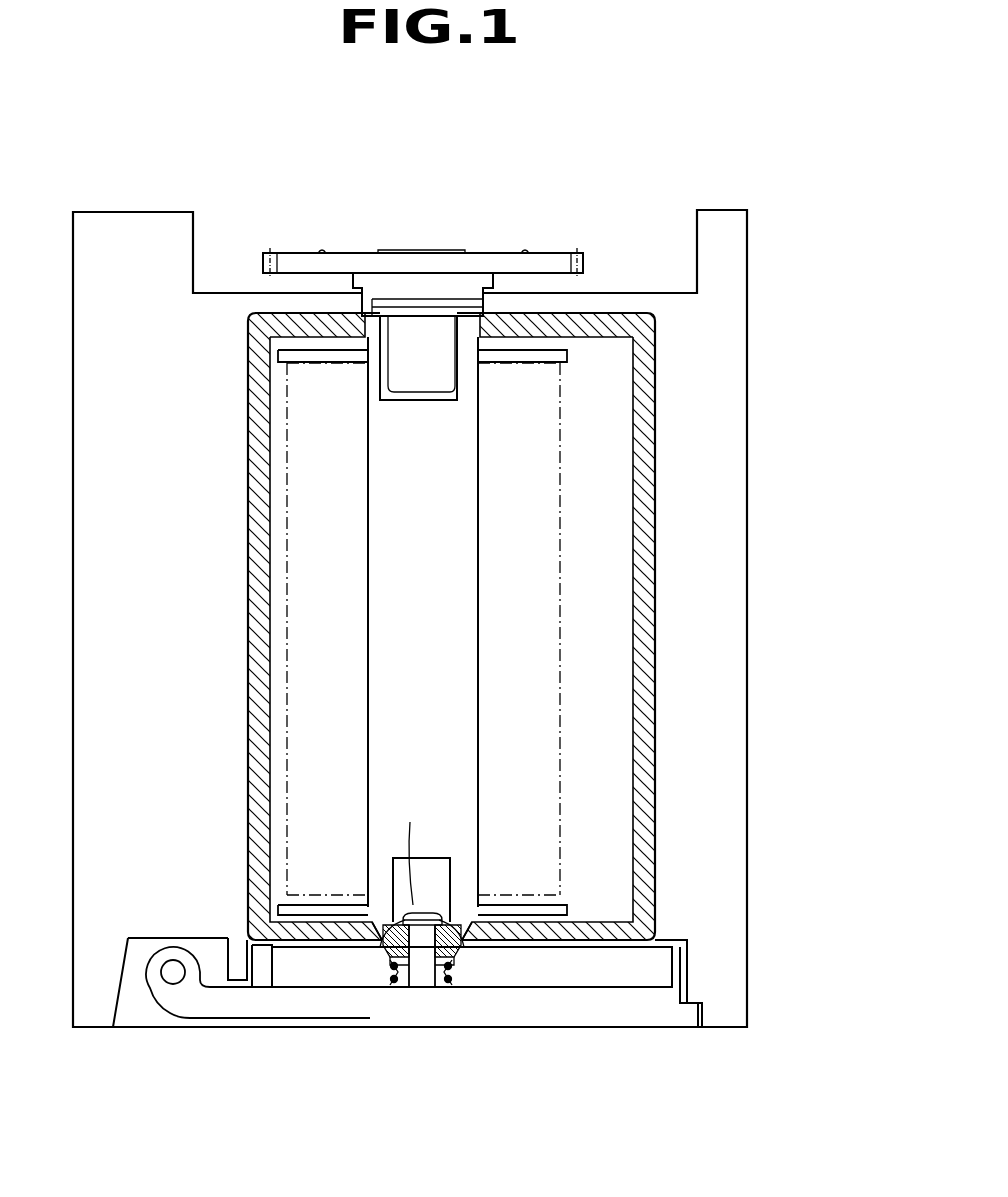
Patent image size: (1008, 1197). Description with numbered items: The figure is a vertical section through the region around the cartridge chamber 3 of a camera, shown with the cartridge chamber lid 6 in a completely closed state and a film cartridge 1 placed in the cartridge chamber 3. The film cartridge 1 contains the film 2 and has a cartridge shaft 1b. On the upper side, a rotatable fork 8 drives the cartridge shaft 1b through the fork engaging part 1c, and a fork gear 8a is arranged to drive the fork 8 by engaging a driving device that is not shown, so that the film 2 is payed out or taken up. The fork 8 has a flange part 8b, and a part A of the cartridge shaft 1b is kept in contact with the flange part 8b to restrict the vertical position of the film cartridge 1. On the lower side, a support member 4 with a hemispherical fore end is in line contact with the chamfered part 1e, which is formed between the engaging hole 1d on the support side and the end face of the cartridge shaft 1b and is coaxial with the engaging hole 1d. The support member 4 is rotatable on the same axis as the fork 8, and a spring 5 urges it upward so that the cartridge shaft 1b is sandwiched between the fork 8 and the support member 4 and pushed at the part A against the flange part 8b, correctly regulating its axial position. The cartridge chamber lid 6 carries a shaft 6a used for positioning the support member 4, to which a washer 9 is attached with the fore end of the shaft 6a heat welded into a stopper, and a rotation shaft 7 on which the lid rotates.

The film cartridge 1 is at (608, 440).
The film 2 is at (547, 505).
The cartridge chamber 3 is at (655, 655).
The support member 4 is at (455, 960).
The spring 5 is at (393, 972).
The cartridge chamber lid 6 is at (672, 1015).
The shaft 6a is at (420, 975).
The rotation shaft 7 is at (173, 975).
The fork 8 is at (425, 332).
The fork gear 8a is at (545, 262).
The flange part 8b is at (400, 317).
The washer 9 is at (410, 847).
The cartridge shaft 1b is at (458, 592).
The fork engaging part 1c is at (460, 363).
The engaging hole 1d is at (443, 880).
The chamfered part 1e is at (470, 922).
The part A is at (375, 317).